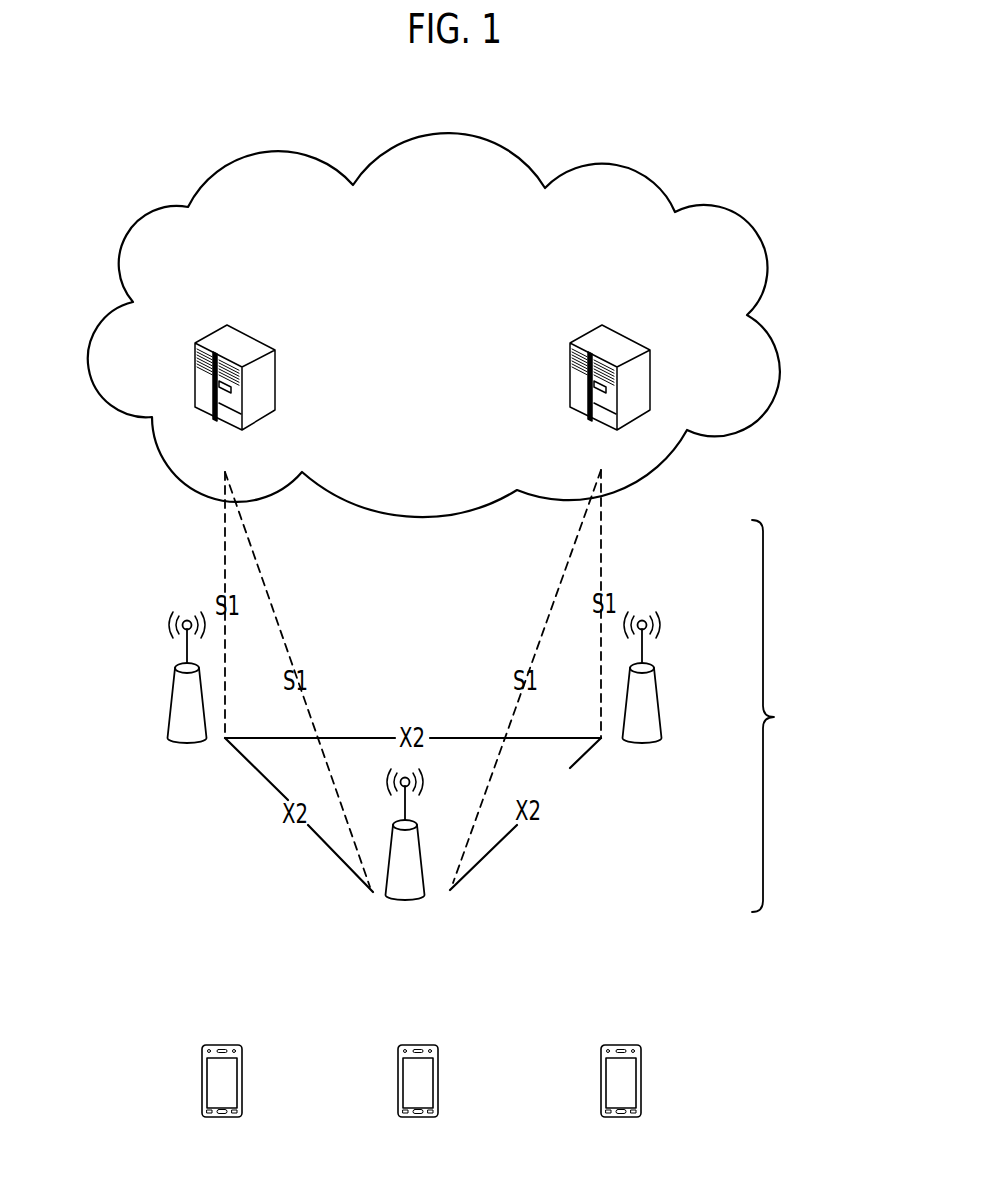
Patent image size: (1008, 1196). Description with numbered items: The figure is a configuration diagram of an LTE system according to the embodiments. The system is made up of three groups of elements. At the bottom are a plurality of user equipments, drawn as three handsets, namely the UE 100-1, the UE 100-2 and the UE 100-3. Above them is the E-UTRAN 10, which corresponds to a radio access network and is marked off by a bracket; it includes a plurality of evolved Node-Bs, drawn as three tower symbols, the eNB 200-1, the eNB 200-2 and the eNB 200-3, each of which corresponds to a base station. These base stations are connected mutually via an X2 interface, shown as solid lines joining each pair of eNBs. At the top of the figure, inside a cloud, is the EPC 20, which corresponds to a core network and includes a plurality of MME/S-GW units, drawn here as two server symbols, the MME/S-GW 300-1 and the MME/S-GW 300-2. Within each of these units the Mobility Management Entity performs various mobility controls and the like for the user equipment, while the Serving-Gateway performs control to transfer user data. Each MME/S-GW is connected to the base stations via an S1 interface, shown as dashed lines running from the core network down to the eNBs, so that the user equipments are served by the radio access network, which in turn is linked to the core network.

The E-UTRAN 10 is at (818, 716).
The EPC 20 is at (653, 172).
The UE 100-1 is at (233, 1047).
The UE 100-2 is at (418, 1045).
The UE 100-3 is at (625, 1045).
The eNB 200-1 is at (170, 705).
The eNB 200-2 is at (425, 872).
The eNB 200-3 is at (655, 685).
The MME/S-GW 300-1 is at (262, 345).
The MME/S-GW 300-2 is at (625, 337).